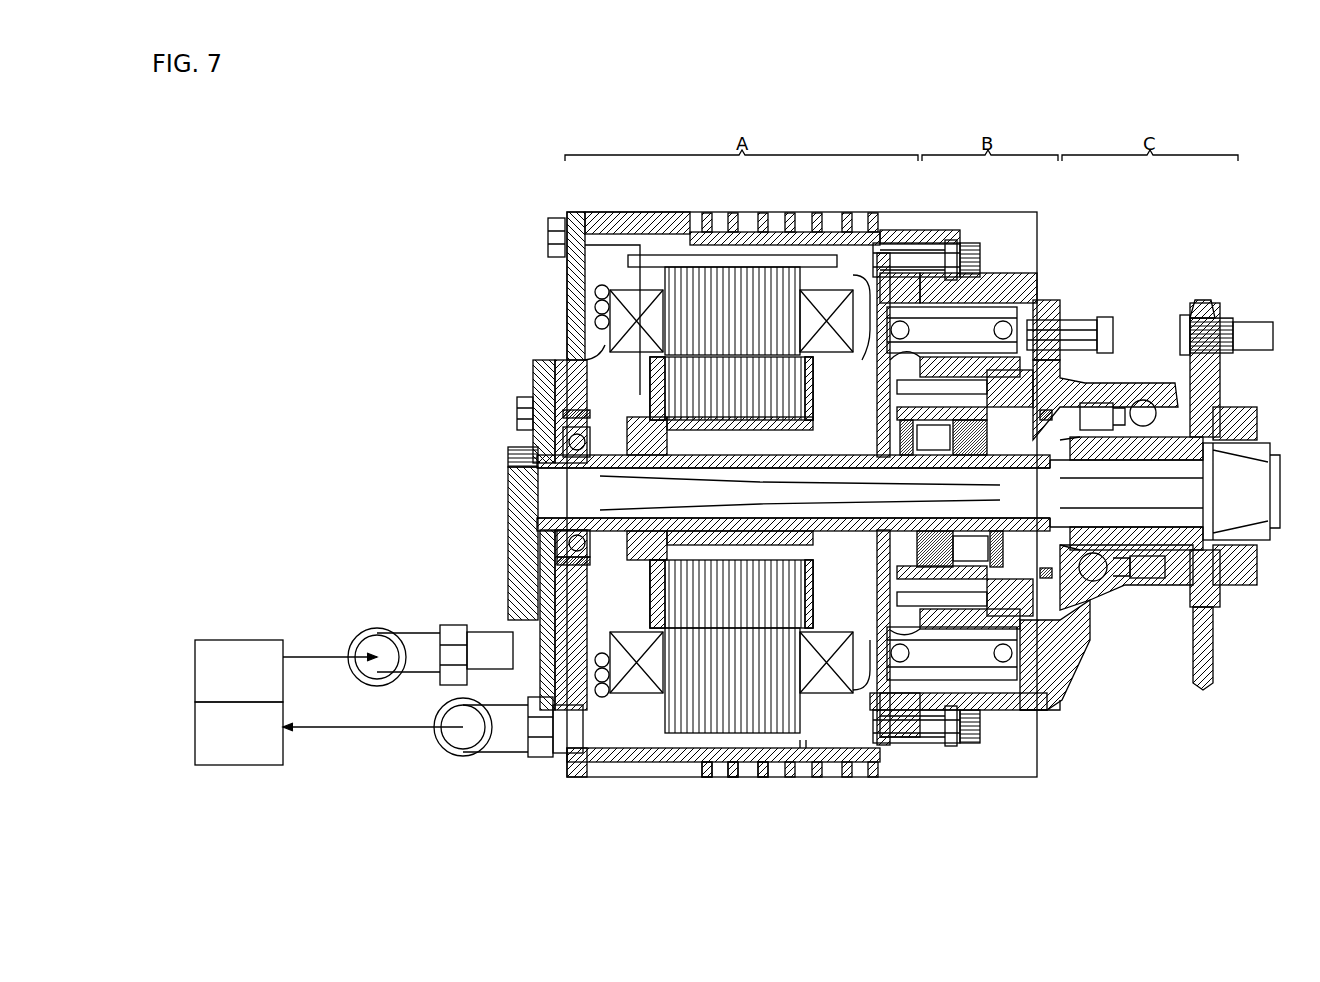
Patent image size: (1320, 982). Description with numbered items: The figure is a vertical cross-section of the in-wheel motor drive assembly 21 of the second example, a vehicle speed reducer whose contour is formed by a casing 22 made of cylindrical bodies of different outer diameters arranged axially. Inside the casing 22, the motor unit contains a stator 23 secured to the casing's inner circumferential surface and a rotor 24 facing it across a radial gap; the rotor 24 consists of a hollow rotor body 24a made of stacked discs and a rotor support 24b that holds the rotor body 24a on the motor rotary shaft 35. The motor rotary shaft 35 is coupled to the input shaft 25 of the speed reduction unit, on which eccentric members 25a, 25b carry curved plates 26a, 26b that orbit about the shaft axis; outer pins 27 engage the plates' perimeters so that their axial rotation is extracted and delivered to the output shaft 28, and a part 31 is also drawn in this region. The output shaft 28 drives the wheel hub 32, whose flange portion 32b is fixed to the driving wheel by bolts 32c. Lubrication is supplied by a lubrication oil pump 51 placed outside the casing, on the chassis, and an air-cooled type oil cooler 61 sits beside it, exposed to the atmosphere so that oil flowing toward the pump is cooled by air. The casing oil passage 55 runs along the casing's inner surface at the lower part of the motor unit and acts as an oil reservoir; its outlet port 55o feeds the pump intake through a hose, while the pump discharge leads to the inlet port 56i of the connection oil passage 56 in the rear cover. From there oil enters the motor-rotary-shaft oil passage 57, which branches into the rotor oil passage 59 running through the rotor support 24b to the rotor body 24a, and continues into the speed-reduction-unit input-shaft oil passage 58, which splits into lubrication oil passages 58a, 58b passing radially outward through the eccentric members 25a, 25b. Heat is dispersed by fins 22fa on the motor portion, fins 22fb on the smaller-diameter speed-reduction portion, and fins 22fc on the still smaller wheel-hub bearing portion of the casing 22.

The in-wheel motor drive assembly 21 is at (556, 204).
The casing 22 is at (614, 770).
The fins 22fa is at (708, 777).
The fins 22fb is at (1028, 712).
The fins 22fc is at (1150, 600).
The stator 23 is at (665, 720).
The rotor 24 is at (452, 572).
The rotor body 24a is at (655, 607).
The rotor support 24b is at (600, 562).
The input shaft 25 is at (838, 712).
The eccentric member 25a is at (866, 742).
The eccentric member 25b is at (1035, 432).
The curved plate 26a is at (935, 735).
The curved plate 26b is at (977, 742).
The outer pins 27 is at (977, 322).
The output shaft 28 is at (1090, 606).
The washer 31 is at (955, 730).
The wheel hub 32 is at (1255, 570).
The flange portion 32b is at (1203, 303).
The bolts 32c is at (1272, 330).
The motor rotary shaft 35 is at (550, 528).
The lubrication oil pump 51 is at (235, 652).
The casing oil passage 55 is at (806, 742).
The outlet port 55o is at (462, 748).
The connection oil passage 56 is at (522, 553).
The inlet port 56i is at (376, 640).
The motor-rotary-shaft oil passage 57 is at (555, 489).
The speed-reduction-unit input-shaft oil passage 58 is at (780, 492).
The lubrication oil passage 58a is at (1060, 485).
The lubrication oil passage 58b is at (1060, 500).
The rotor oil passage 59 is at (640, 407).
The air-cooled type oil cooler 61 is at (240, 750).